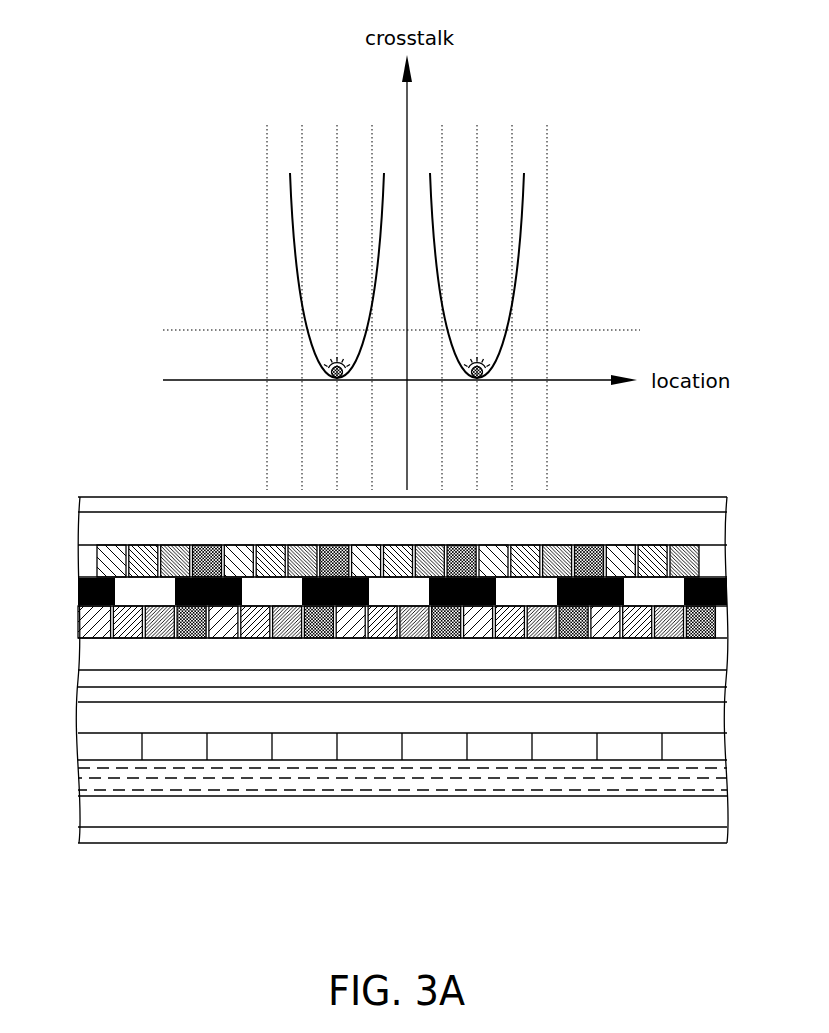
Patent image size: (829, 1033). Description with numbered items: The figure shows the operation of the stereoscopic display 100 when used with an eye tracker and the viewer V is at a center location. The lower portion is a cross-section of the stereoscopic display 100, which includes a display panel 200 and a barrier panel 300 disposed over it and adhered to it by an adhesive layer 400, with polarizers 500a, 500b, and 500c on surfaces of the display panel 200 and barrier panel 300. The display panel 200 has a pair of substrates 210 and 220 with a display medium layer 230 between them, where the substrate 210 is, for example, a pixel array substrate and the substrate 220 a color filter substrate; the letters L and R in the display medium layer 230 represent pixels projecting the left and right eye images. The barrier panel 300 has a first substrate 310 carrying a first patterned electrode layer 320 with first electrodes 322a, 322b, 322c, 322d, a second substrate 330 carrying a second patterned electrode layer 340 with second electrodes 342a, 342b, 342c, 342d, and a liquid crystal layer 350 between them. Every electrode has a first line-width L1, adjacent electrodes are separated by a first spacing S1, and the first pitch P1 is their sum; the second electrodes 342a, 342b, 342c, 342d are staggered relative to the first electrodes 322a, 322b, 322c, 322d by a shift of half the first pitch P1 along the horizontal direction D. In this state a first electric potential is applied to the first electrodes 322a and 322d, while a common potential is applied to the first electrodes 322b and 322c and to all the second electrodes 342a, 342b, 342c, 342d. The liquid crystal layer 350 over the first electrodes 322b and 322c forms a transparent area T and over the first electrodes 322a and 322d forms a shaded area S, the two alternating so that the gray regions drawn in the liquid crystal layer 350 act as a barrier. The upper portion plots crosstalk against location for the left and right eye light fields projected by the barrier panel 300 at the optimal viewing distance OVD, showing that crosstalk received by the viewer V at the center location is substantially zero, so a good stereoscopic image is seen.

The stereoscopic display 100 is at (733, 898).
The display panel 200 is at (439, 760).
The substrate 210 is at (424, 807).
The substrate 220 is at (718, 720).
The display medium layer 230 is at (735, 735).
The barrier panel 300 is at (417, 589).
The first substrate 310 is at (423, 651).
The first patterned electrode layer 320 is at (401, 660).
The first electrode 322a is at (97, 638).
The first electrode 322b is at (125, 638).
The first electrode 322c is at (158, 638).
The first electrode 322d is at (187, 638).
The second substrate 330 is at (718, 528).
The second patterned electrode layer 340 is at (423, 521).
The second electrode 342a is at (120, 543).
The second electrode 342b is at (142, 543).
The second electrode 342c is at (175, 543).
The second electrode 342d is at (208, 543).
The liquid crystal layer 350 is at (725, 598).
The adhesive layer 400 is at (718, 679).
The polarizer 500a is at (718, 837).
The polarizer 500b is at (718, 694).
The polarizer 500c is at (717, 506).
The horizontal direction D is at (62, 494).
The first pitch P1 is at (38, 518).
The first spacing S1 is at (118, 567).
The first line-width L1 is at (145, 567).
The shaded area S is at (512, 543).
The transparent area T is at (532, 590).
The viewer V is at (472, 391).
The optimal viewing distance OVD is at (580, 396).